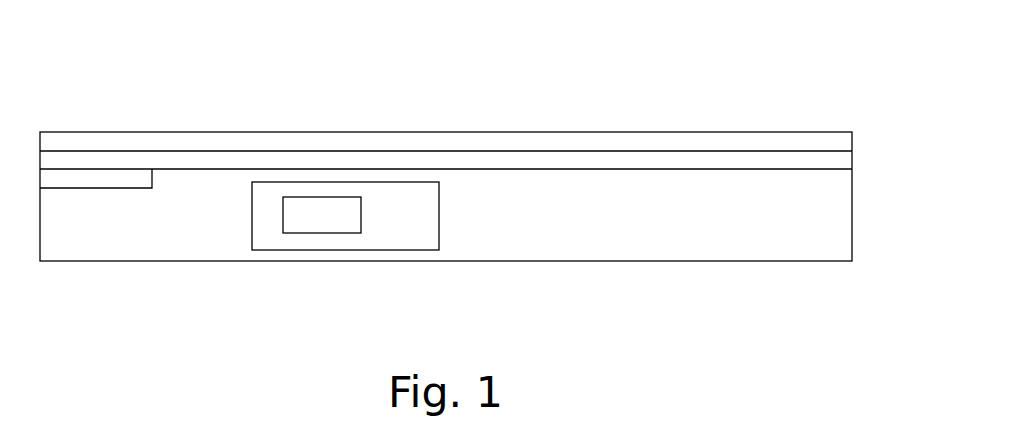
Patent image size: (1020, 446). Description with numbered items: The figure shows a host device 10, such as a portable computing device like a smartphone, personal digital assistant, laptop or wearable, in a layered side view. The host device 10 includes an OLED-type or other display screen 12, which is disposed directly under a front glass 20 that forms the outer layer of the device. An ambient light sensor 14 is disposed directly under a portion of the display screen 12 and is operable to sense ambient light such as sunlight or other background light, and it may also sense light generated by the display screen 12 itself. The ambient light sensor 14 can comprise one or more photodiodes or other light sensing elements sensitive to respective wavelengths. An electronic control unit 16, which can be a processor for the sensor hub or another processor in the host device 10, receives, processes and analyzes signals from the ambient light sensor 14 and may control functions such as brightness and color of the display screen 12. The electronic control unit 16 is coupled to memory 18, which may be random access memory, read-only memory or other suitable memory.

The host device 10 is at (808, 95).
The display screen 12 is at (839, 160).
The ambient light sensor 14 is at (91, 181).
The electronic control unit 16 is at (432, 219).
The memory 18 is at (317, 225).
The front glass 20 is at (737, 142).